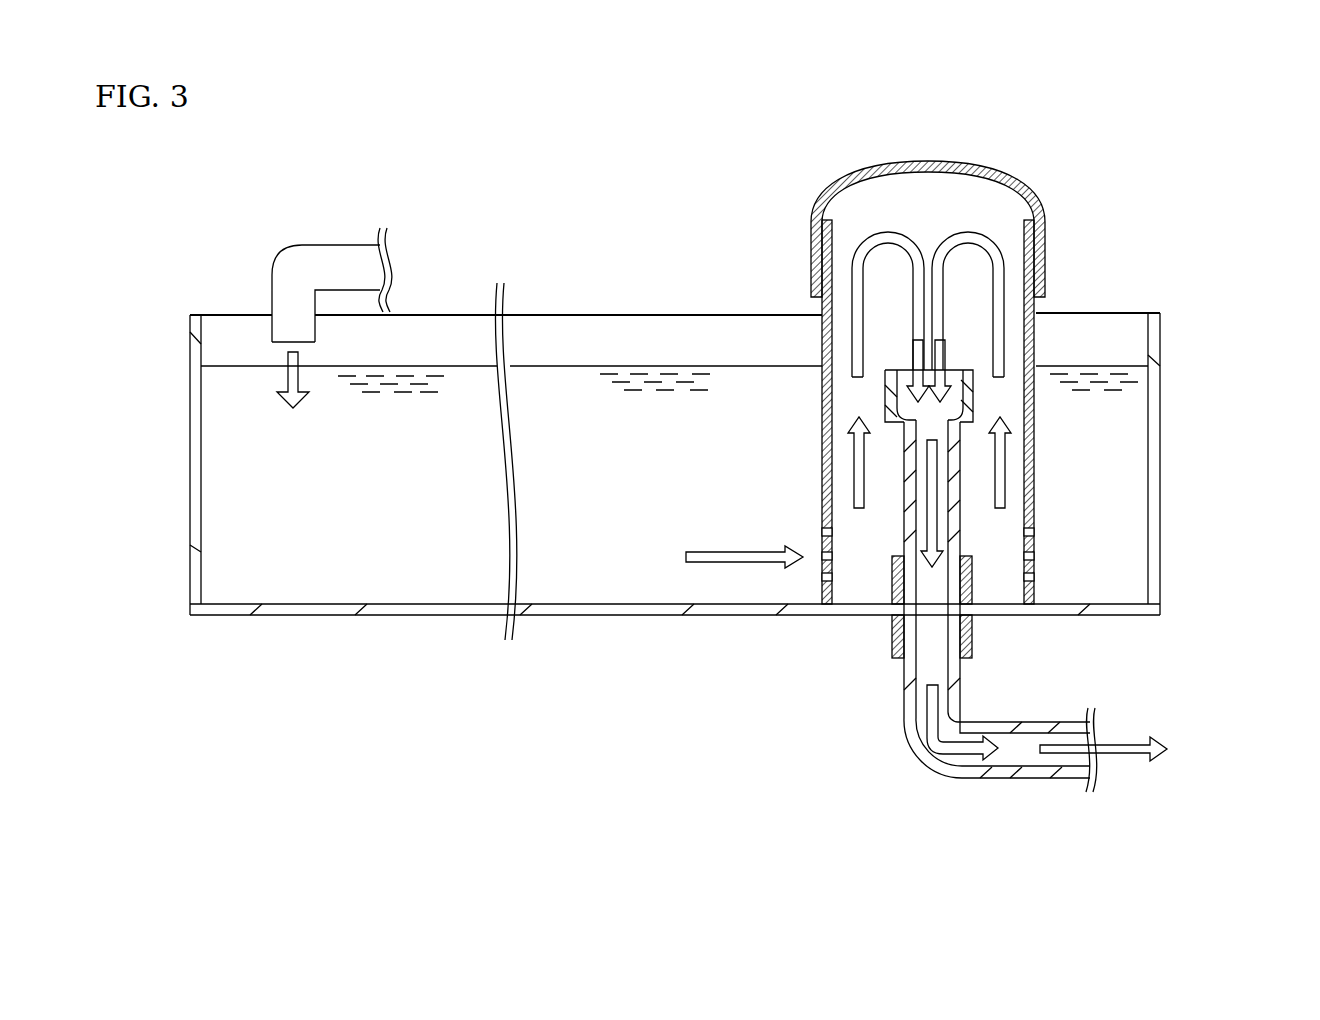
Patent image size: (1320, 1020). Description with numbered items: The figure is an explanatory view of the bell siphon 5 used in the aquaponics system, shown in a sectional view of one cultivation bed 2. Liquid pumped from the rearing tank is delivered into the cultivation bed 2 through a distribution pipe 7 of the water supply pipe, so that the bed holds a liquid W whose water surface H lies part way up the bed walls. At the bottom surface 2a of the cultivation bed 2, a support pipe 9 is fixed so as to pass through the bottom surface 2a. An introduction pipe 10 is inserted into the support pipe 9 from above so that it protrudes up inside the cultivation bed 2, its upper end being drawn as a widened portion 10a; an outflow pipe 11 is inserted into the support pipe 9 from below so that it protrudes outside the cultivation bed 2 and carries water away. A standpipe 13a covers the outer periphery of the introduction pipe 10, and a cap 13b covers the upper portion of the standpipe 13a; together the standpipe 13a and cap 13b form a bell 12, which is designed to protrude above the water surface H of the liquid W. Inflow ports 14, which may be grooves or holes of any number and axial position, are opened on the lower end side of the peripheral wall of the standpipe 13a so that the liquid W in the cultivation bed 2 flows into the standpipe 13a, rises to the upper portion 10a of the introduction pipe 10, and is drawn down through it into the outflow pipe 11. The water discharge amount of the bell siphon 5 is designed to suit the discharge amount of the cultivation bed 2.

The cultivation bed 2 is at (191, 521).
The bottom surface 2a is at (636, 616).
The bell siphon 5 is at (1023, 476).
The distribution pipe 7 is at (325, 258).
The support pipe 9 is at (972, 632).
The introduction pipe 10 is at (1077, 540).
The header of discharge pipe 10a is at (957, 368).
The outflow pipe 11 is at (1040, 720).
The bell 12 is at (1040, 382).
The standpipe 13a is at (1037, 336).
The cap 13b is at (1046, 269).
The inflow port 14 is at (822, 577).
The liquid W is at (553, 395).
The water surface H is at (598, 367).